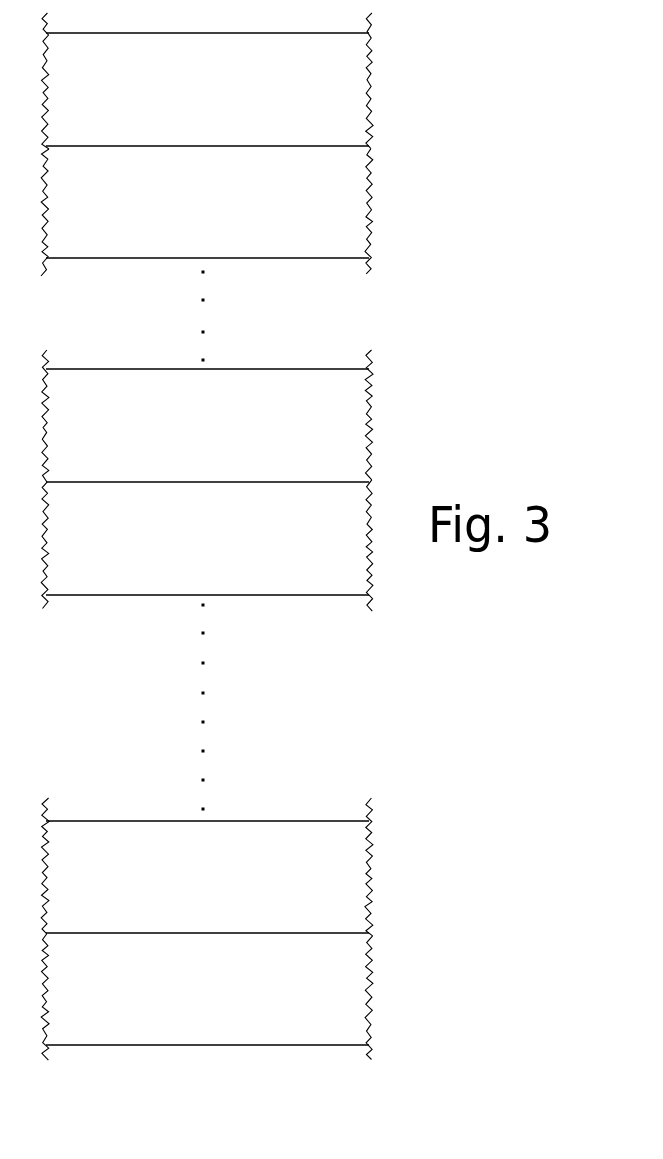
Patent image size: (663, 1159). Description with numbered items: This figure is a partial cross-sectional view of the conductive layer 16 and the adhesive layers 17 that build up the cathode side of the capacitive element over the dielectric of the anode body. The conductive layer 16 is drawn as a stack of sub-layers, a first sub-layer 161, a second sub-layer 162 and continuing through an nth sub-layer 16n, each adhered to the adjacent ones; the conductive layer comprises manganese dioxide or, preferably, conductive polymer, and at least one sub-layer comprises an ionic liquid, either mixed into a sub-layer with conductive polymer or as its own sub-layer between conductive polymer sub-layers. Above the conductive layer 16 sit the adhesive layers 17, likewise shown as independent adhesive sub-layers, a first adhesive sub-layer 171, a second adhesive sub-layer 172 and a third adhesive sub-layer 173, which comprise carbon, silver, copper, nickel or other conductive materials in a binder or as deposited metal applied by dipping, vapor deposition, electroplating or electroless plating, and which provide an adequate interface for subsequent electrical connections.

The conductive layer 16 is at (207, 770).
The adhesive layers 17 is at (207, 247).
The first layer 16^1 161 is at (207, 997).
The first layer 16^2 162 is at (207, 867).
The first layer 16^n 16n is at (207, 545).
The second layer 17^1 171 is at (207, 416).
The second layer 17^2 172 is at (207, 212).
The second layer 17^3 173 is at (208, 81).